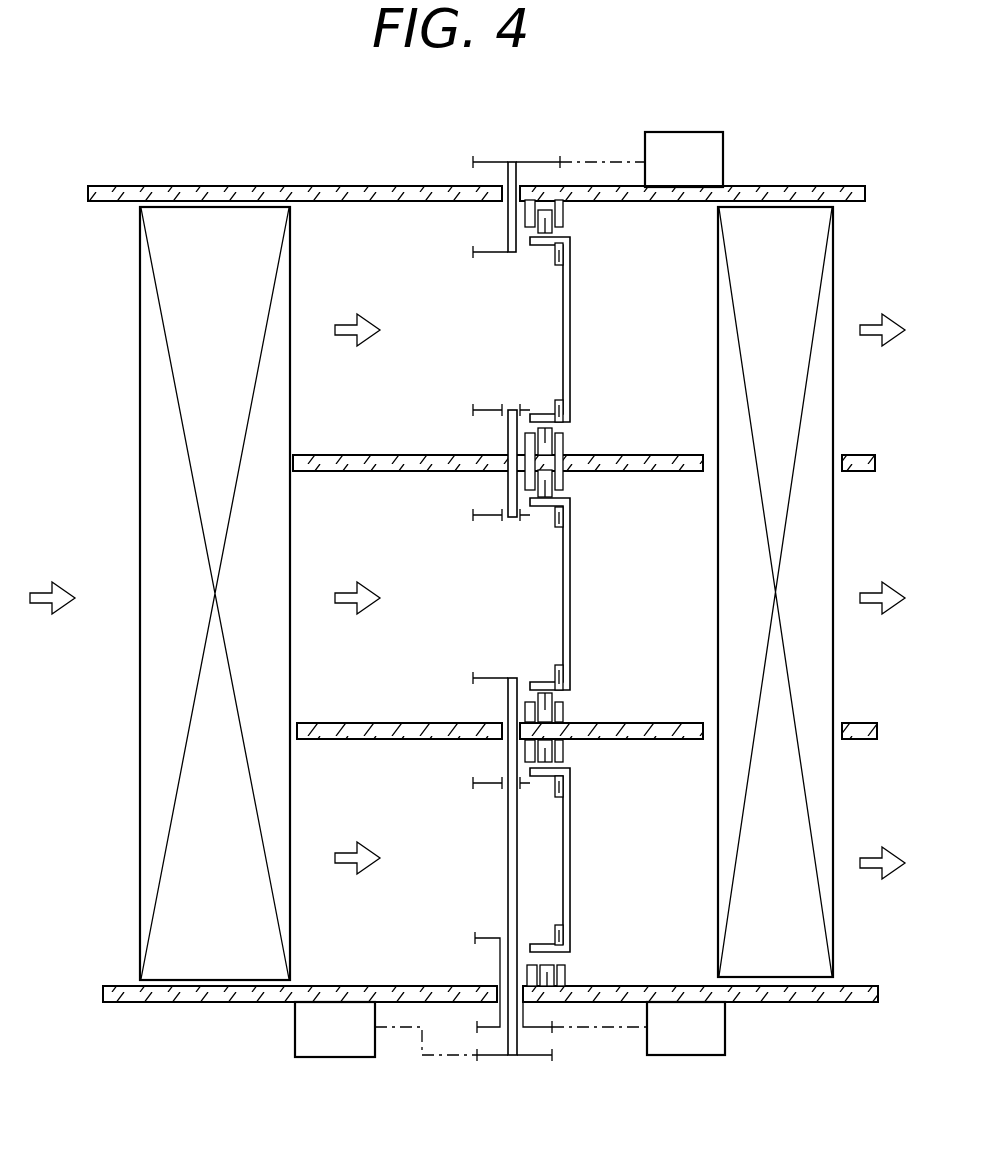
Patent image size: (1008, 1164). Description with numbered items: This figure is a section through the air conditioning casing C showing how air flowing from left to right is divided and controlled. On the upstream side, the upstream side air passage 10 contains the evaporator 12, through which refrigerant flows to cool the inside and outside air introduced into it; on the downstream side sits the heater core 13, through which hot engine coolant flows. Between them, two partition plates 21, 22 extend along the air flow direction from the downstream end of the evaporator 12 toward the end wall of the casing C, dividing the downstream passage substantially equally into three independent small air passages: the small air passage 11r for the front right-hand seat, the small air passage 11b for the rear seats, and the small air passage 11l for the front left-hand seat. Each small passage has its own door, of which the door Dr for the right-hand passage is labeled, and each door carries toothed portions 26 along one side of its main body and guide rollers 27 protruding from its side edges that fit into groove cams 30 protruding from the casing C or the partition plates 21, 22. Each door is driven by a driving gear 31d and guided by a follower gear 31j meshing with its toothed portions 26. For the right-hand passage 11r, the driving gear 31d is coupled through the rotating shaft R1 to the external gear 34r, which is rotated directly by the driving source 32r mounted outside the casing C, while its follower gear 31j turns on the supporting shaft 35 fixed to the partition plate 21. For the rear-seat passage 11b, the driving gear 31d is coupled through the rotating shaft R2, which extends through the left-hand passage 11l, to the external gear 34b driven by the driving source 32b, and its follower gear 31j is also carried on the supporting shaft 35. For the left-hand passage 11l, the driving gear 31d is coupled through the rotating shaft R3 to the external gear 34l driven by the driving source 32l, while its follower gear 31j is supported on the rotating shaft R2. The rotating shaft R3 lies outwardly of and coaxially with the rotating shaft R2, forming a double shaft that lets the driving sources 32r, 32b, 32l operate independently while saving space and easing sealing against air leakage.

The casing C is at (289, 185).
The upstream side air passage 10 is at (80, 560).
The small air passage for the front right-hand seat 11r is at (634, 357).
The small air passage for the rear seats 11b is at (667, 617).
The small air passage for the front left-hand seat 11l is at (634, 897).
The evaporator 12 is at (215, 955).
The heater core 13 is at (782, 953).
The partition plate 21 is at (345, 472).
The partition plate 22 is at (355, 740).
The toothed portion 26 is at (558, 264).
The guide roller 27 is at (552, 228).
The groove cam 30 is at (563, 212).
The driving gear 31d is at (473, 252).
The follower gear 31j is at (473, 410).
The driving source 32r is at (641, 159).
The driving source 32b is at (401, 1031).
The driving source 32l is at (638, 1028).
The external gear 34r is at (473, 162).
The external gear 34l is at (552, 1027).
The external gear 34b is at (552, 1055).
The supporting shaft 35 is at (508, 432).
The door Dr is at (570, 300).
The rotating shaft R1 is at (508, 226).
The rotating shaft R2 is at (508, 700).
The rotating shaft R3 is at (508, 955).